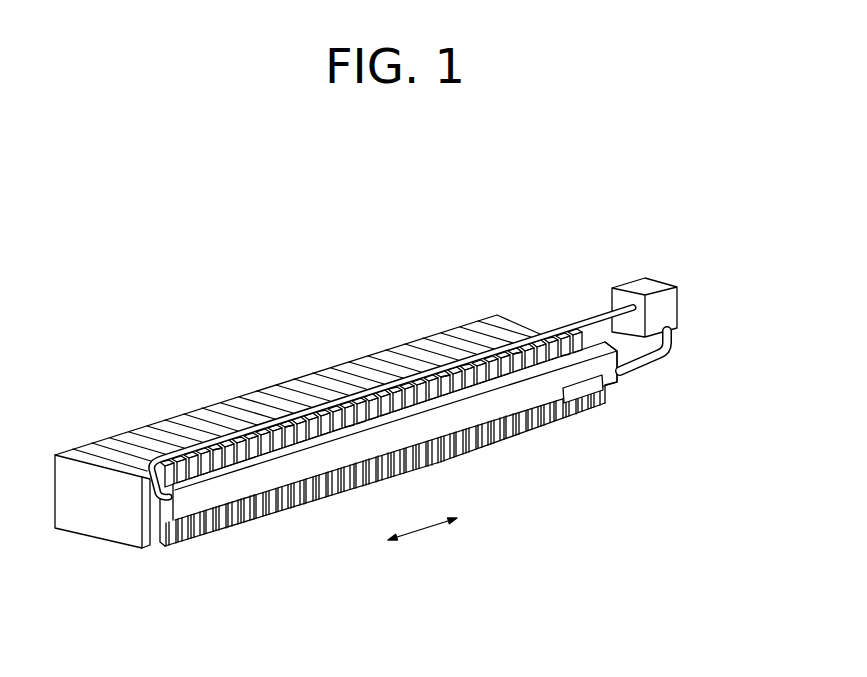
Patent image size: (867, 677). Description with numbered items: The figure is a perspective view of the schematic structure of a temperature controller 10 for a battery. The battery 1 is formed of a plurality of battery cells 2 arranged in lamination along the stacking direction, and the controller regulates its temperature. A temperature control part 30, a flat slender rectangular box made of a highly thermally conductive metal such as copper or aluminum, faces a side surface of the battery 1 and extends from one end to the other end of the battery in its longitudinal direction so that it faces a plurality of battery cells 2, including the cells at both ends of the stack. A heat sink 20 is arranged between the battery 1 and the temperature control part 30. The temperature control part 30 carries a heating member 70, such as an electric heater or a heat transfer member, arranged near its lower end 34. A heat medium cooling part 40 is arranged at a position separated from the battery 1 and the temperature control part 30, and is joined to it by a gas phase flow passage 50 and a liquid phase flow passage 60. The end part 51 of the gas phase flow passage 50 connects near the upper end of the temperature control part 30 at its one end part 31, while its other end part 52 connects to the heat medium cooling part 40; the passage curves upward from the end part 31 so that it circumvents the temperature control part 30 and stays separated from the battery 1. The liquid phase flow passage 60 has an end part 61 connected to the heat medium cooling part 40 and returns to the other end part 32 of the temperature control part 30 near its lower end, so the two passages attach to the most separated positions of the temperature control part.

The battery 1 is at (250, 380).
The battery cells 2 is at (177, 423).
The temperature controller for a battery 10 is at (686, 232).
The heat sink 20 is at (277, 500).
The temperature control part 30 is at (443, 423).
The one end part 31 is at (162, 545).
The other end part 32 is at (623, 355).
The lower end 34 is at (360, 475).
The heat medium cooling part 40 is at (662, 297).
The gas phase flow passage 50 is at (384, 385).
The end part 51 is at (173, 498).
The end part 52 is at (630, 290).
The liquid phase flow passage 60 is at (652, 360).
The end part 61 is at (673, 338).
The heating member 70 is at (584, 412).